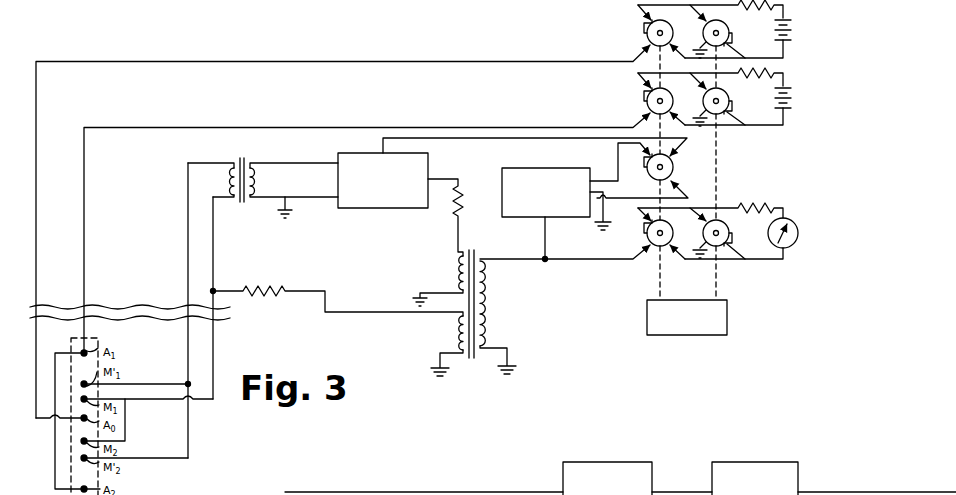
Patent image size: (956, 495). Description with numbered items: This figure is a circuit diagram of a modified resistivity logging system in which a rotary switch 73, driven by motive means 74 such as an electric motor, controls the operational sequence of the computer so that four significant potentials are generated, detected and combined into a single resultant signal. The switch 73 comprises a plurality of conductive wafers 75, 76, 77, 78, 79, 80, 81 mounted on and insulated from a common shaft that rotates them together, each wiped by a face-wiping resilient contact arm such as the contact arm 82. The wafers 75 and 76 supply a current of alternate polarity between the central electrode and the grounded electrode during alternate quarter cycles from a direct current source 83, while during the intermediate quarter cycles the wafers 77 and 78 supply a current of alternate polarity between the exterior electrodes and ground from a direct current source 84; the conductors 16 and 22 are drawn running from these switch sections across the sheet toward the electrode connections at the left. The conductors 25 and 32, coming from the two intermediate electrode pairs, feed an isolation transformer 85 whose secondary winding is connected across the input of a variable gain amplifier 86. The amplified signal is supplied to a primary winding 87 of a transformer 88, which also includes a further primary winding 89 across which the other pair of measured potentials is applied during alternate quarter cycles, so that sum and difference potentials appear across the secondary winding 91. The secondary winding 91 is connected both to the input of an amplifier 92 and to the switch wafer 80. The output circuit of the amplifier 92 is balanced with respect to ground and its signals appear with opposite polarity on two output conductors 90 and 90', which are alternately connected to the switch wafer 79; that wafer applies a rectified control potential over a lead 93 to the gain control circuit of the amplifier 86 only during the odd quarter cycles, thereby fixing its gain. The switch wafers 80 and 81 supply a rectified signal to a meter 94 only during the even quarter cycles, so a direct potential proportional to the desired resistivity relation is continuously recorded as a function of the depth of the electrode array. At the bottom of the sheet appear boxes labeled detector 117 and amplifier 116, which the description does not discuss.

The conductor line 16 is at (162, 61).
The conductor line 22 is at (162, 127).
The conductor 25 is at (213, 347).
The conductor 32 is at (188, 347).
The rotary switch 73 is at (632, 93).
The motive means 74 is at (727, 320).
The switch wafer 75 is at (672, 38).
The switch wafer 76 is at (729, 28).
The switch wafer 77 is at (647, 108).
The switch wafer 78 is at (729, 97).
The switch wafer 79 is at (674, 168).
The switch wafer 80 is at (671, 238).
The switch wafer 81 is at (729, 229).
The contact arm 82 is at (646, 21).
The direct current source 83 is at (779, 34).
The direct current source 84 is at (779, 106).
The isolation transformer 85 is at (248, 158).
The variable gain amplifier 86 is at (403, 208).
The primary winding 87 is at (457, 271).
The transformer 88 is at (476, 360).
The further primary winding 89 is at (458, 330).
The output conductor 90 is at (620, 162).
The output conductor 90' is at (639, 205).
The secondary winding 91 is at (490, 317).
The amplifier 92 is at (531, 218).
The lead 93 is at (527, 138).
The meter 94 is at (770, 238).
The amplifier 116 is at (753, 462).
The detector 117 is at (617, 462).